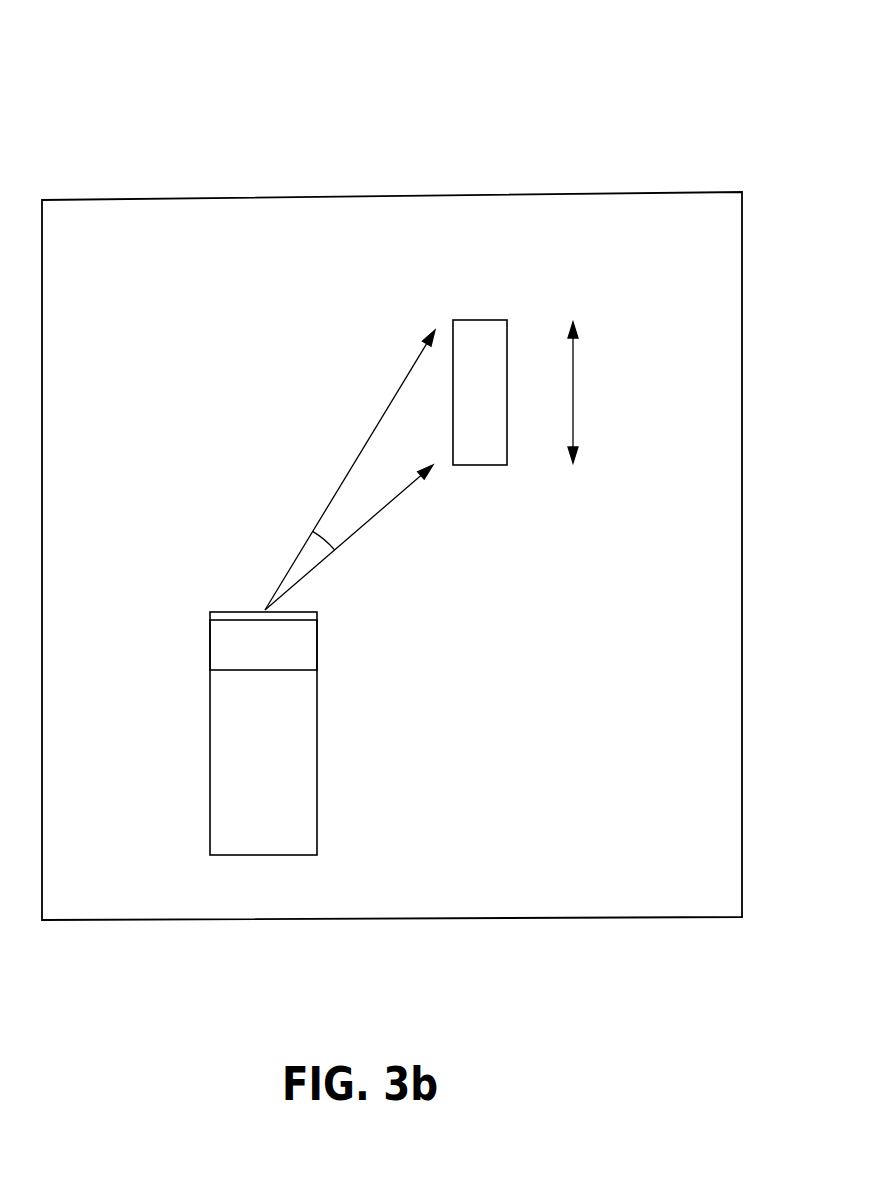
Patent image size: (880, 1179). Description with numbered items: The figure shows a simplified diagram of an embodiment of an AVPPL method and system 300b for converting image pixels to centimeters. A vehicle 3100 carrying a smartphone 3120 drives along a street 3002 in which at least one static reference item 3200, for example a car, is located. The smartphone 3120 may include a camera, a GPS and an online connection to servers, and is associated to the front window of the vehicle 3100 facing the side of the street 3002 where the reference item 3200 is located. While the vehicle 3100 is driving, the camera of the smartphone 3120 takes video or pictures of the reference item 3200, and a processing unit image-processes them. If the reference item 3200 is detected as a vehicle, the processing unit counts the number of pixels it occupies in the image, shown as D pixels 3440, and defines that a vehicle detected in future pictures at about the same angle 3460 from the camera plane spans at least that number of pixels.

The AVPPL method and system 300b is at (113, 152).
The street 3002 is at (392, 526).
The vehicle 3100 is at (199, 733).
The smartphone 3120 is at (212, 636).
The static reference item 3200 is at (519, 363).
The D pixels 3440 is at (645, 375).
The angle 3460 is at (348, 461).